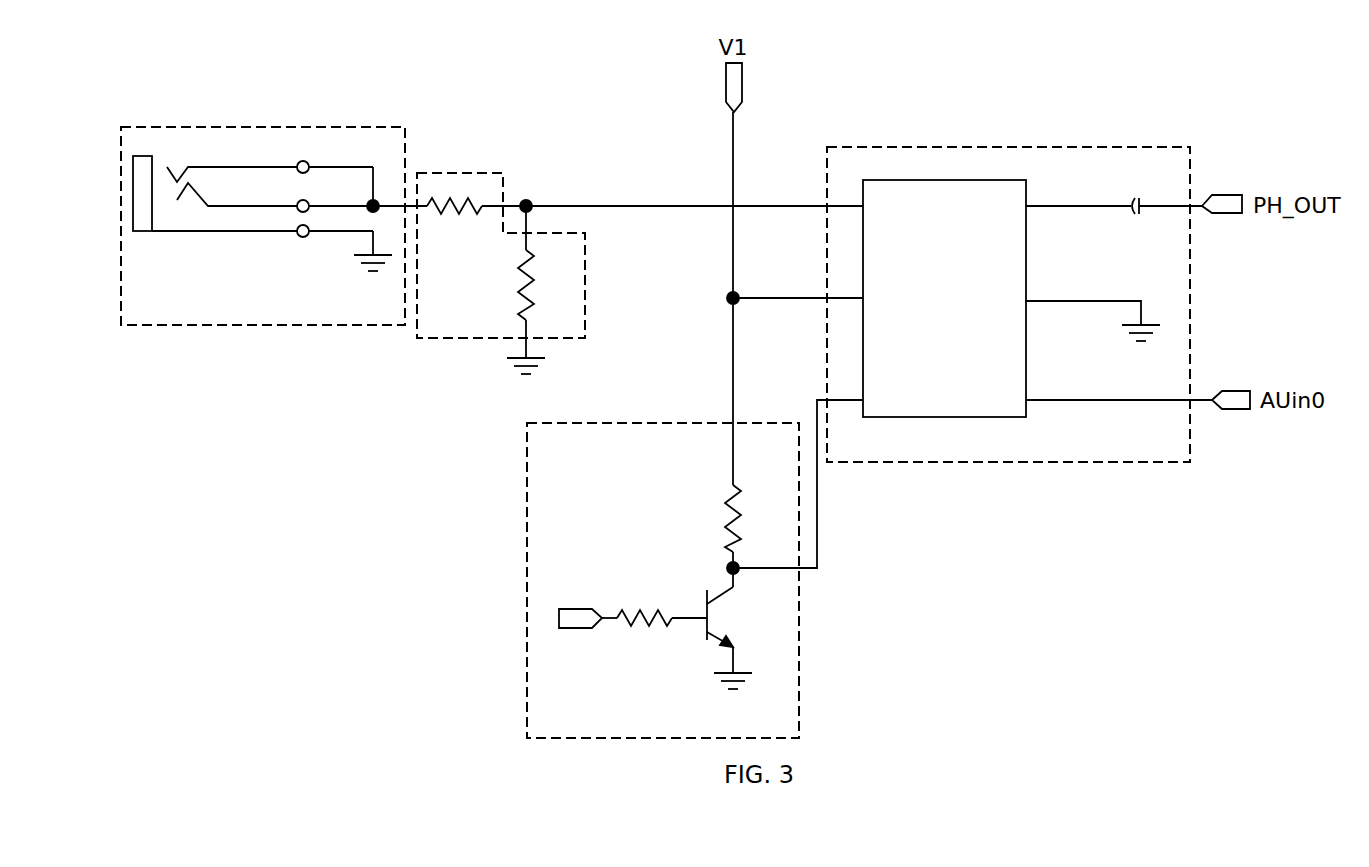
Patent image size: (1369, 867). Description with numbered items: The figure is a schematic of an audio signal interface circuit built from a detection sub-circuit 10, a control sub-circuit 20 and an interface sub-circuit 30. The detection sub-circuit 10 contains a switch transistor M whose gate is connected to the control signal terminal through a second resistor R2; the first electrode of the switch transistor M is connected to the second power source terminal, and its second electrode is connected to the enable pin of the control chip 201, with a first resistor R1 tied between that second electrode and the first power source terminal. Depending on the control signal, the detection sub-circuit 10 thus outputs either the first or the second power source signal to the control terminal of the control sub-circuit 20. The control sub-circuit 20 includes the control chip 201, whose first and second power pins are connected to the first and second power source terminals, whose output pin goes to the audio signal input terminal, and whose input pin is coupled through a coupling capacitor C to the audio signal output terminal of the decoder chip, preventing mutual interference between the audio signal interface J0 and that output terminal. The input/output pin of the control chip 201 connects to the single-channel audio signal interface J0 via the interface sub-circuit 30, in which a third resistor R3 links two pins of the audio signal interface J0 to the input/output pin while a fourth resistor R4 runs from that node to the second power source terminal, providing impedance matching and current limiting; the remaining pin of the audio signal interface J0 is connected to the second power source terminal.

The detection sub-circuit 10 is at (641, 423).
The control sub-circuit 20 is at (1003, 147).
The interface sub-circuit 30 is at (446, 173).
The control chip 201 is at (944, 286).
The audio signal interface J0 is at (252, 127).
The first resistor R1 is at (750, 518).
The second resistor R2 is at (644, 603).
The third resistor R3 is at (454, 227).
The fourth resistor R4 is at (544, 285).
The capacitor C is at (1136, 190).
The switch transistor M is at (734, 630).